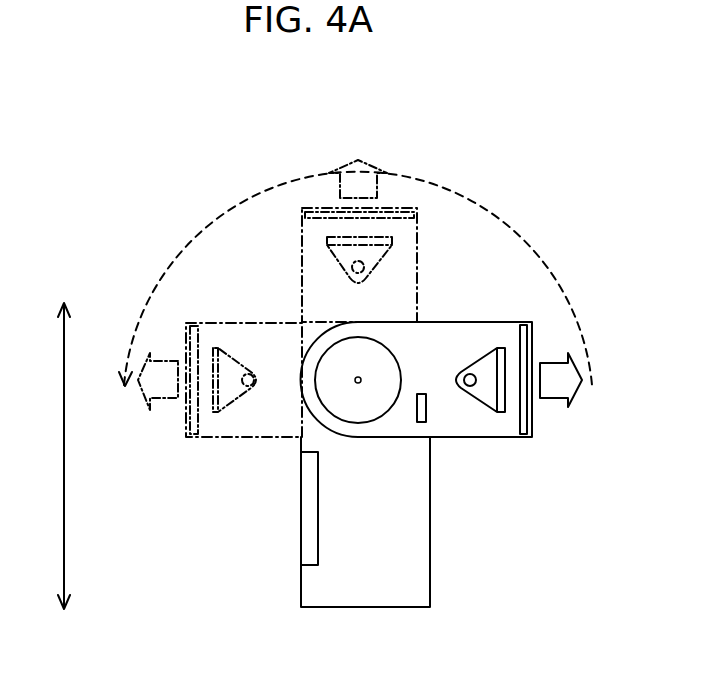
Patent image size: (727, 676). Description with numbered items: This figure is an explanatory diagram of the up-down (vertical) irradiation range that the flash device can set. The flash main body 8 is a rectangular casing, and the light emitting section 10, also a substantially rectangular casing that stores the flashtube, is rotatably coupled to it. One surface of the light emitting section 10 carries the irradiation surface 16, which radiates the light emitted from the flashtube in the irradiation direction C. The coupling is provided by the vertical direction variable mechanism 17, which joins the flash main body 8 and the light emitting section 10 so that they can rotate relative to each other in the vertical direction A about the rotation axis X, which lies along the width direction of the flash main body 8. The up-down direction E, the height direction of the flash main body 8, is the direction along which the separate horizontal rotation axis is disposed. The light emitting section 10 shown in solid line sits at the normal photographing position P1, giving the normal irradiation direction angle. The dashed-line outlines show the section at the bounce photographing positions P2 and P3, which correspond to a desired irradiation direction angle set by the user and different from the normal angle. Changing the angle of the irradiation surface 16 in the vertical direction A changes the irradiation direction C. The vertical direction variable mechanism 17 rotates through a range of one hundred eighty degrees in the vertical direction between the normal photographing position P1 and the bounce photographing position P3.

The flash main body 8 is at (430, 530).
The light emitting section 10 is at (483, 437).
The irradiation surface 16 is at (532, 420).
The vertical direction variable mechanism 17 is at (316, 383).
The rotation axis X is at (358, 380).
The vertical direction A is at (355, 279).
The irradiation direction C is at (360, 285).
The up-down direction E is at (52, 456).
The normal photographing position P1 is at (454, 437).
The bounce photographing position P2 is at (417, 265).
The bounce photographing position P3 is at (255, 323).